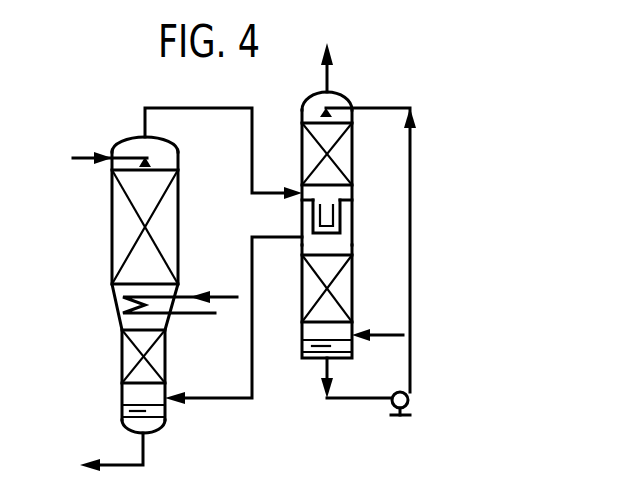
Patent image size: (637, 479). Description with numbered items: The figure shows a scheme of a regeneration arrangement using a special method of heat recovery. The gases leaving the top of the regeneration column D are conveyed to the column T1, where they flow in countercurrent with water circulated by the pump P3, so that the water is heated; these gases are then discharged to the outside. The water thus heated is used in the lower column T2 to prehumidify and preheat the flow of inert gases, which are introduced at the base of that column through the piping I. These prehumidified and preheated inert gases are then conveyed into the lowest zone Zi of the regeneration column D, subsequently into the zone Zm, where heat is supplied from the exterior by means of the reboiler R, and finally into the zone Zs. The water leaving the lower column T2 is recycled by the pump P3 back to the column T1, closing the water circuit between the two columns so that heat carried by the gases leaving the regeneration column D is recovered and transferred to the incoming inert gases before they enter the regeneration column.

The regeneration column D is at (187, 289).
The upper zone of the regeneration column Zs is at (87, 226).
The intermediate zone of the regeneration column Zm is at (89, 306).
The lowest zone of the regeneration column Zi is at (84, 365).
The reboiler R is at (180, 293).
The column T1 is at (290, 223).
The lower column T2 is at (333, 321).
The piping I is at (388, 335).
The pump P3 is at (414, 405).